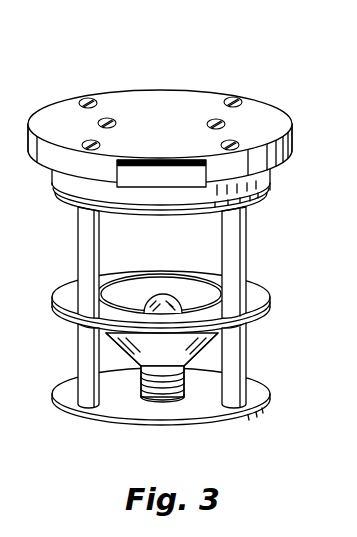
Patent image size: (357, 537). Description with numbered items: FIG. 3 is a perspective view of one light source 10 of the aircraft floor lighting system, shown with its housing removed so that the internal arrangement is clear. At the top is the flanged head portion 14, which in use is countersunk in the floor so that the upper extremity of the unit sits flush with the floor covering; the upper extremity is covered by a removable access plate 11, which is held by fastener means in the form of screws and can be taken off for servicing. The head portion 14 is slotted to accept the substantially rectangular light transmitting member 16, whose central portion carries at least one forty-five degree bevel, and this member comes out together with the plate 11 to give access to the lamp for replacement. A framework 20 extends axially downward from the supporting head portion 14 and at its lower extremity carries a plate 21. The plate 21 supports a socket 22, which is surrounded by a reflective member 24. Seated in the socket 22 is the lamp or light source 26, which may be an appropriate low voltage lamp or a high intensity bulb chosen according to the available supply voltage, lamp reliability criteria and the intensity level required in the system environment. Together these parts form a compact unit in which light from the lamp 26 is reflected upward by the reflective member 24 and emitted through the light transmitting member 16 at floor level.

The light source 10 is at (125, 78).
The access plate 11 is at (196, 104).
The head portion 14 is at (266, 182).
The light transmitting member 16 is at (164, 173).
The framework 20 is at (229, 245).
The plate 21 is at (249, 380).
The socket 22 is at (160, 373).
The reflective member 24 is at (136, 343).
The light source 26 is at (165, 302).